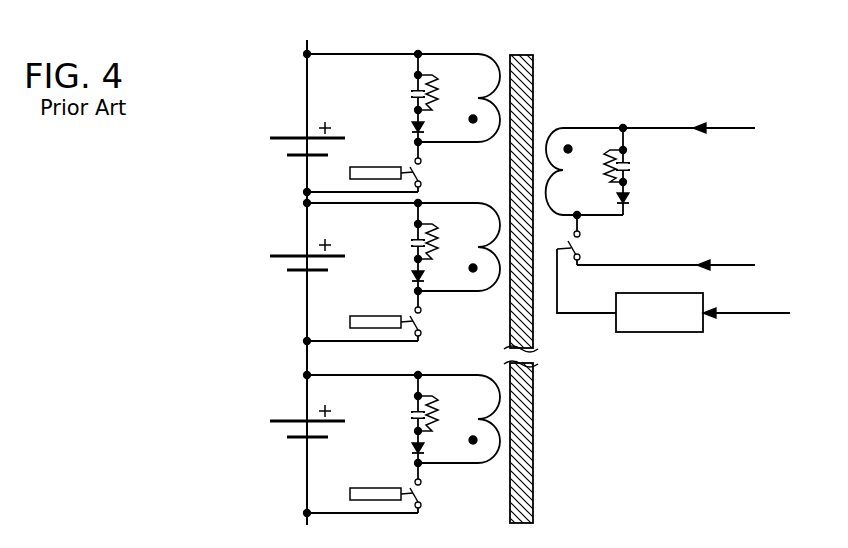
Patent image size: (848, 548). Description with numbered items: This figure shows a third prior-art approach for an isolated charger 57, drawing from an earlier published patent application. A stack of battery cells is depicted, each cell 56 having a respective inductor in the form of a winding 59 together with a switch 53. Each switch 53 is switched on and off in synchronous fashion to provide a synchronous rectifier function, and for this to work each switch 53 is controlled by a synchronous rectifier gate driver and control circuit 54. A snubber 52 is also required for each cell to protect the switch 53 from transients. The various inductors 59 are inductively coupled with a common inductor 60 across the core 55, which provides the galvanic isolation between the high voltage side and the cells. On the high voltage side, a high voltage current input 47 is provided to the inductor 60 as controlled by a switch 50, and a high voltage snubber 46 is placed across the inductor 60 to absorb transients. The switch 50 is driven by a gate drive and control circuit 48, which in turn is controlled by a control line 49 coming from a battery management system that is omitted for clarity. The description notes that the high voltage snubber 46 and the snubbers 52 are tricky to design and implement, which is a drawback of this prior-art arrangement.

The high voltage snubber 46 is at (626, 172).
The high voltage current input 47 is at (723, 128).
The gate drive and control circuit 48 is at (648, 333).
The control line 49 is at (735, 314).
The switch 50 is at (584, 248).
The snubber 52 is at (415, 100).
The switch 53 is at (423, 175).
The synchronous rectifier gate driver and control circuit 54 is at (393, 167).
The magnetic core 55 is at (497, 51).
The cell 56 is at (272, 139).
The isolated charger 57 is at (277, 48).
The winding 59 is at (479, 73).
The inductor 60 is at (578, 148).